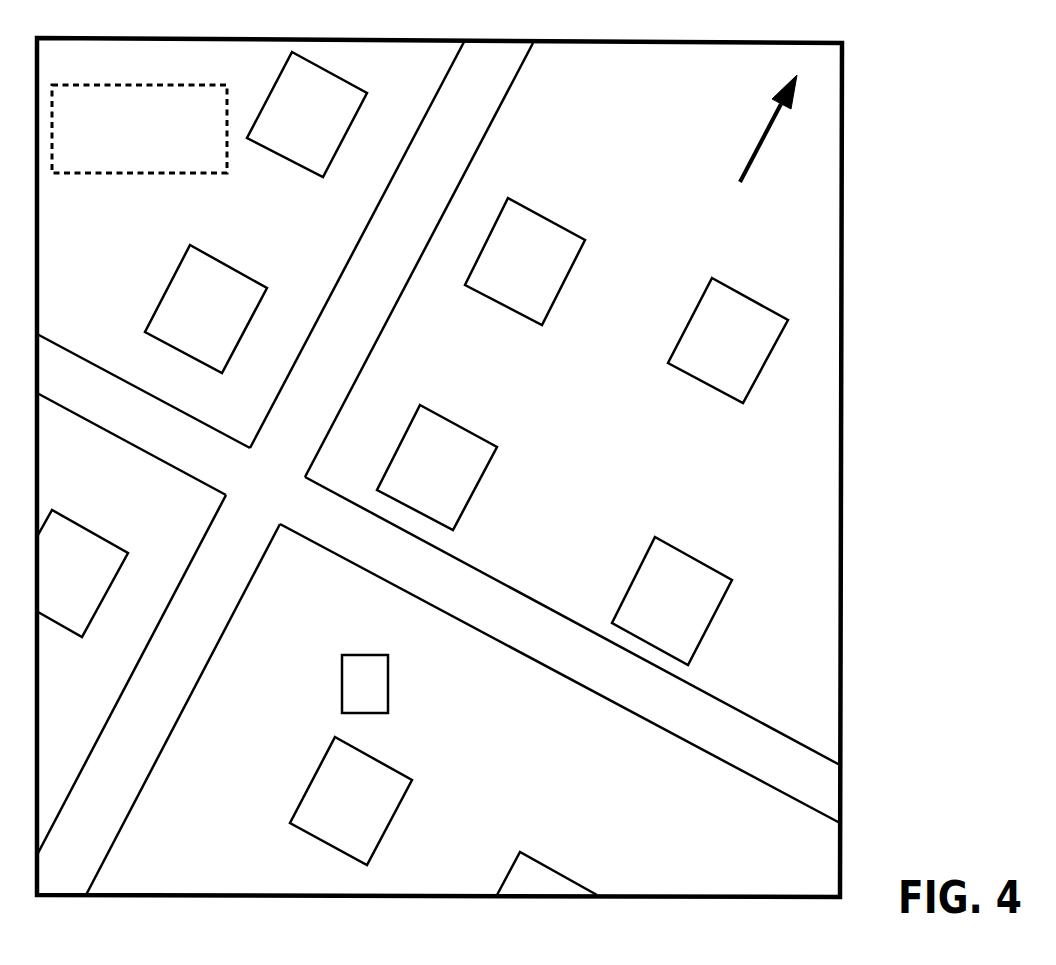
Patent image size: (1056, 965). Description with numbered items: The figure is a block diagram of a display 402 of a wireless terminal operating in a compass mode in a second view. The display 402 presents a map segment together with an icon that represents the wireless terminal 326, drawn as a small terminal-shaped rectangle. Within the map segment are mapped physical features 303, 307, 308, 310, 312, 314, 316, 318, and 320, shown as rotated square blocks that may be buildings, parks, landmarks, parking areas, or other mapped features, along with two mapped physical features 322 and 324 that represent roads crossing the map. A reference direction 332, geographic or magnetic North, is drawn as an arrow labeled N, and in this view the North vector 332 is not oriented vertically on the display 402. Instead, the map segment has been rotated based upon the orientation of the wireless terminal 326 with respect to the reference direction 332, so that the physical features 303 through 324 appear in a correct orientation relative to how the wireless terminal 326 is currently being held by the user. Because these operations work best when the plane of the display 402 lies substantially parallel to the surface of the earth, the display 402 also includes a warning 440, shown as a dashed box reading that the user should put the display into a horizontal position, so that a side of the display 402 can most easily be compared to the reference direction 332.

The display 402 is at (755, 43).
The warning 440 is at (137, 85).
The building 303 is at (307, 114).
The mapped physical feature 307 is at (525, 261).
The mapped physical feature 308 is at (728, 340).
The mapped physical feature 310 is at (206, 309).
The mapped physical feature 312 is at (437, 467).
The mapped physical feature 314 is at (672, 601).
The mapped physical feature 316 is at (83, 573).
The mapped physical feature 318 is at (351, 801).
The mapped physical feature 320 is at (543, 848).
The mapped physical feature (road) 322 is at (250, 607).
The mapped physical feature (road) 324 is at (507, 568).
The wireless terminal 326 is at (372, 655).
The reference direction 332 is at (745, 173).